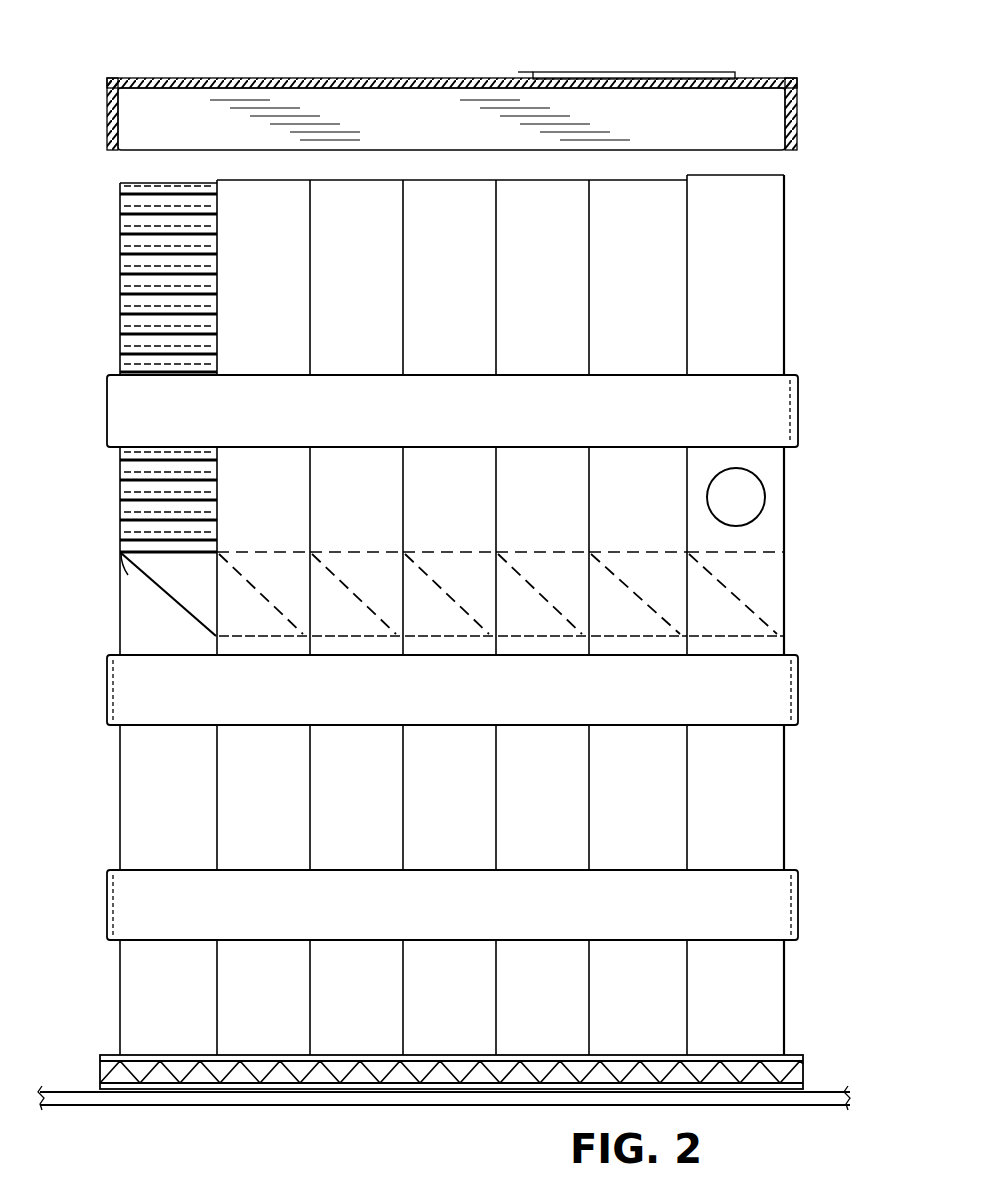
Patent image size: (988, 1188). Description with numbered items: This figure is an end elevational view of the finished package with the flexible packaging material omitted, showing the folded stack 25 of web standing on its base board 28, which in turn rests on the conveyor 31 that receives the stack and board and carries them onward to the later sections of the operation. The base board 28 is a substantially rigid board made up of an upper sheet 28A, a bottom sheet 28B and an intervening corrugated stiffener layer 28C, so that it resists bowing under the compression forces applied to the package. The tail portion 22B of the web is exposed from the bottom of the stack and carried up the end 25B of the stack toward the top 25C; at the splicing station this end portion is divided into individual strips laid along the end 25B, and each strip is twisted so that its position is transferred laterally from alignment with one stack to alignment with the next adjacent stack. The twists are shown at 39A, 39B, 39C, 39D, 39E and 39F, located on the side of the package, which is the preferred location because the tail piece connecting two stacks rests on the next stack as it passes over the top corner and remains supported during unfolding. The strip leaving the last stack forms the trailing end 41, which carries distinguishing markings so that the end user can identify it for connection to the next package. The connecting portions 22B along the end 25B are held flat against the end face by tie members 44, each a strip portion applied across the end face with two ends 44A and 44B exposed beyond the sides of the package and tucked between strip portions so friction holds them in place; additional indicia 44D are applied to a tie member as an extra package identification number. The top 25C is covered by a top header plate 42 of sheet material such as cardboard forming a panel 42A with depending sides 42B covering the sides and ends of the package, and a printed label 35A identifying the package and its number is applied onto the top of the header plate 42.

The top header plate 42 is at (308, 72).
The panel 42A is at (452, 72).
The depending sides 42B is at (102, 113).
The label 35A is at (638, 68).
The top of the stack 25C is at (200, 171).
The tail portion of the web 22B is at (205, 283).
The end of the stack 25B is at (152, 497).
The tie member end 44A is at (102, 415).
The tie member end 44B is at (800, 394).
The indicia 44D is at (506, 408).
The twist 39A is at (153, 597).
The twist 39B is at (268, 558).
The twist 39C is at (358, 558).
The twist 39D is at (465, 517).
The twist 39E is at (540, 558).
The twist 39F is at (652, 558).
The trailing end 41 is at (752, 530).
The tie members 44 is at (140, 686).
The folded stack 25 is at (111, 787).
The base board 28 is at (814, 1070).
The upper sheet 28A is at (110, 1049).
The bottom sheet 28B is at (167, 1089).
The corrugated stiffener layer 28C is at (276, 1070).
The conveyor 31 is at (72, 1088).